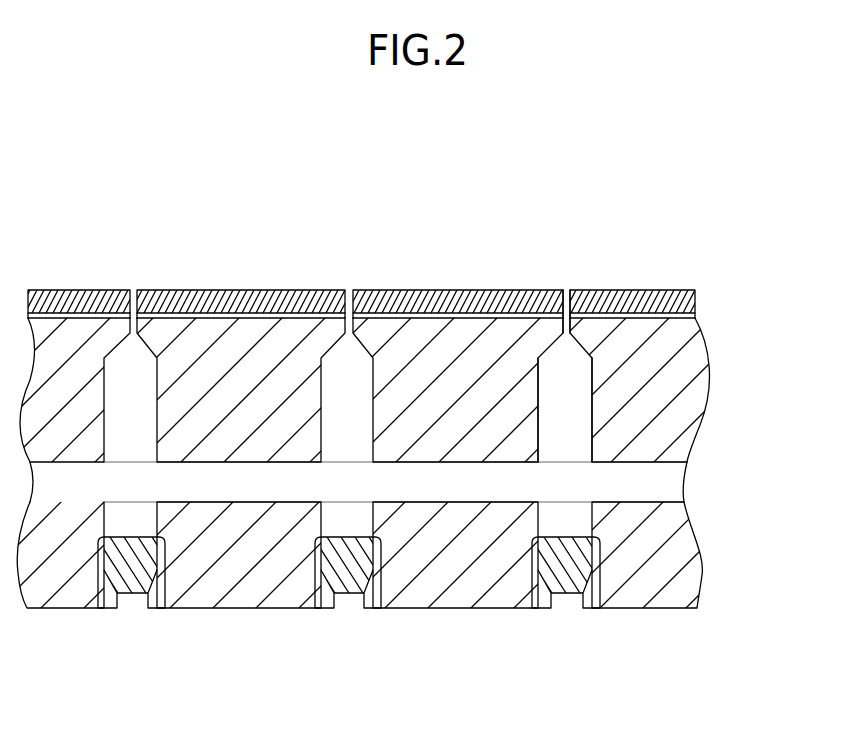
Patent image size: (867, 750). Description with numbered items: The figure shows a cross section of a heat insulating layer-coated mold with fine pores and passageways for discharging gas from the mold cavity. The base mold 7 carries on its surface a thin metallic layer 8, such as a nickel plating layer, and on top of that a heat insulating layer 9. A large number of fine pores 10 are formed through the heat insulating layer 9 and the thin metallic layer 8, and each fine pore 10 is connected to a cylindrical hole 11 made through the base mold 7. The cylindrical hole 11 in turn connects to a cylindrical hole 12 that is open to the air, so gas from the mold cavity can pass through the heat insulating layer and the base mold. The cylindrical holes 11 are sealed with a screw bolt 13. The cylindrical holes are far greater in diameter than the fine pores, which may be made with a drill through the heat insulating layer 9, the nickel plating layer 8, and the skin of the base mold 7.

The base mold 7 is at (692, 378).
The thin metallic layer 8 is at (700, 340).
The heat insulating layer 9 is at (630, 295).
The fine pore 10 is at (568, 300).
The cylindrical hole 11 is at (567, 413).
The cylindrical hole 12 is at (662, 483).
The screw bolt 13 is at (572, 570).